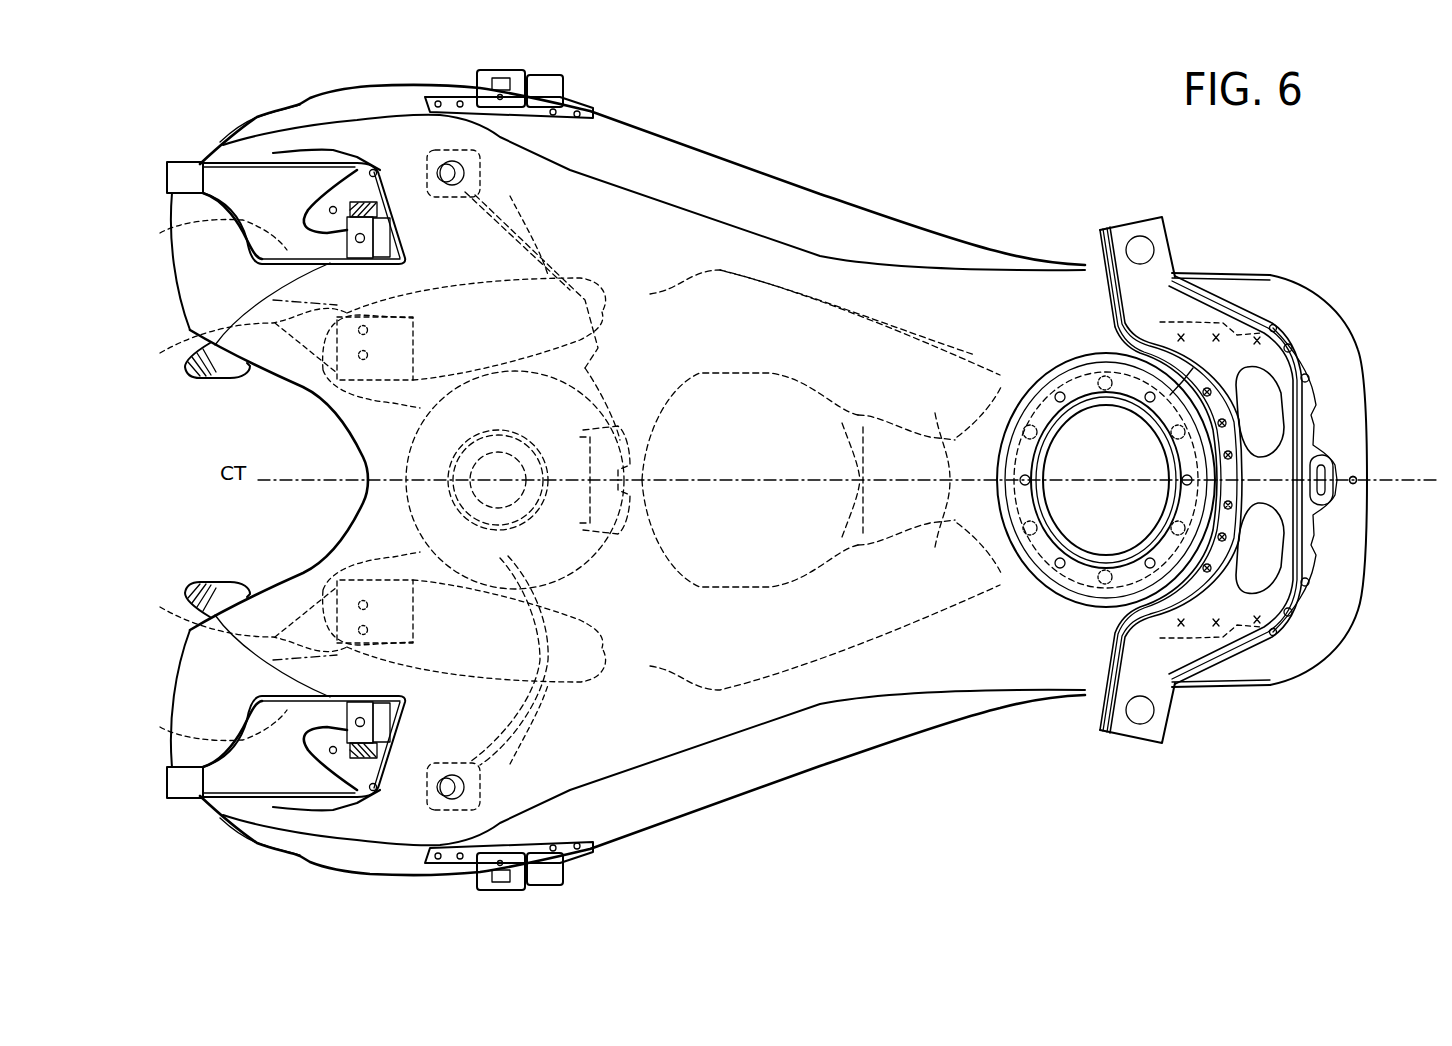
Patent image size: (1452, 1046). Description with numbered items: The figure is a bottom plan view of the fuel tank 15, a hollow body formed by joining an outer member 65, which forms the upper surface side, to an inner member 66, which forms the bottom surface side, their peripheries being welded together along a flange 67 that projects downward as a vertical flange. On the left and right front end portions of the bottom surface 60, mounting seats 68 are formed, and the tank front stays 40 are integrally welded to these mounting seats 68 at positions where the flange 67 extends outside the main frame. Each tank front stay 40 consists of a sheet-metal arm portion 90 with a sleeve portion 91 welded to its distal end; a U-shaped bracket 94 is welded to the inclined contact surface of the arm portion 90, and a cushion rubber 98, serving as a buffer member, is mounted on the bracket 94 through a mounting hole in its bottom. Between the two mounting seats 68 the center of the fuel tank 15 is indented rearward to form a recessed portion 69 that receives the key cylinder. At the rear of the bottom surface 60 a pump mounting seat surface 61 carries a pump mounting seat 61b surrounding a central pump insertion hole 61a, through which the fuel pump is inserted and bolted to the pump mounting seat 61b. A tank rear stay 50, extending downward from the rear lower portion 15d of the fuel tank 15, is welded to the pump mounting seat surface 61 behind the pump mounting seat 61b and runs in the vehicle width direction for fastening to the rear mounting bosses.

The fuel tank 15 is at (872, 130).
The rear lower portion 15d is at (1350, 380).
The tank front stay 40 is at (233, 157).
The tank rear stay 50 is at (1232, 315).
The bottom surface 60 is at (915, 600).
The pump mounting seat surface 61 is at (1080, 630).
The pump insertion hole 61a is at (1160, 367).
The pump mounting seat 61b is at (1070, 385).
The outer member 65 is at (779, 236).
The inner member 66 is at (367, 473).
The flange 67 is at (920, 265).
The mounting seat 68 is at (212, 218).
The recessed portion 69 is at (345, 535).
The arm portion 90 is at (258, 183).
The sleeve portion 91 is at (175, 170).
The bracket 94 is at (333, 210).
The cushion rubber 98 is at (208, 344).